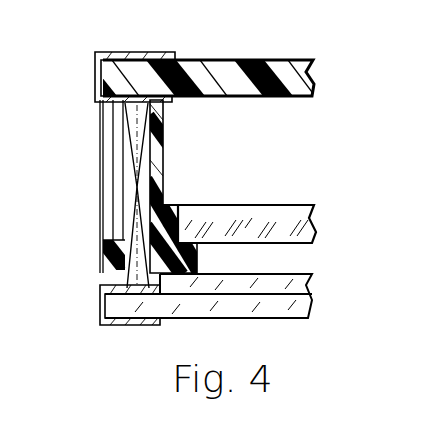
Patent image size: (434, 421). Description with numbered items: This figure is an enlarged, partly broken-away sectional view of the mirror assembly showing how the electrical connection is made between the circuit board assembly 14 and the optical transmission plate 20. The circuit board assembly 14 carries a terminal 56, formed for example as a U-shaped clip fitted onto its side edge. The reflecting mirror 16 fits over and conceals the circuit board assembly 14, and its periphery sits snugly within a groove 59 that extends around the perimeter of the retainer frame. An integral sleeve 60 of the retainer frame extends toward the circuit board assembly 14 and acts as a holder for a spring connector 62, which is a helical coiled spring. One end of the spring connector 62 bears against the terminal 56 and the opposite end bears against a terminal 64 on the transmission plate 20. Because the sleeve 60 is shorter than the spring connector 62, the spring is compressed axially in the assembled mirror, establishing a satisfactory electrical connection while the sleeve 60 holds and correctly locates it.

The circuit board assembly 14 is at (271, 61).
The reflecting mirror 16 is at (300, 207).
The optical transmission plate 20 is at (327, 274).
The terminal 56 is at (95, 80).
The groove 59 is at (178, 240).
The sleeve 60 is at (164, 150).
The spring connector 62 is at (125, 154).
The terminal 64 is at (101, 316).